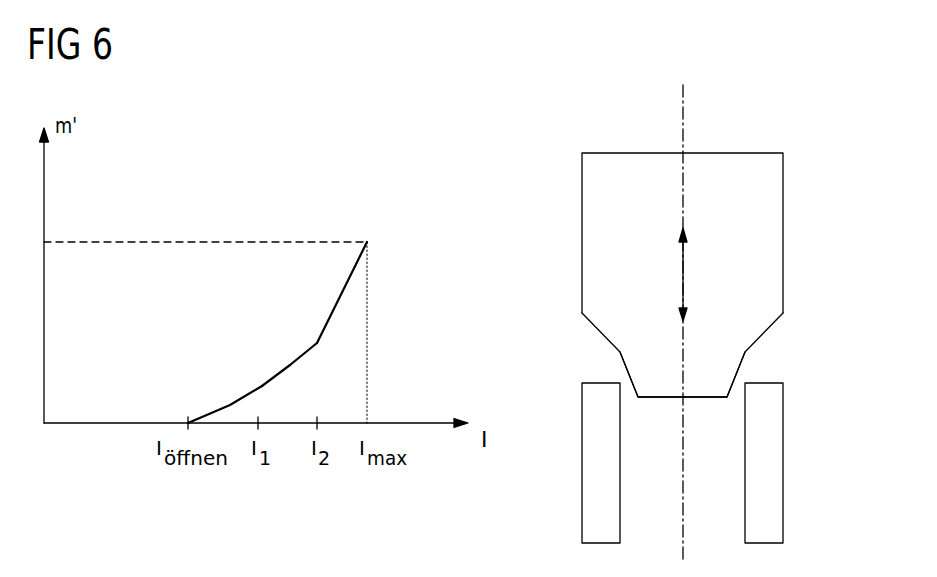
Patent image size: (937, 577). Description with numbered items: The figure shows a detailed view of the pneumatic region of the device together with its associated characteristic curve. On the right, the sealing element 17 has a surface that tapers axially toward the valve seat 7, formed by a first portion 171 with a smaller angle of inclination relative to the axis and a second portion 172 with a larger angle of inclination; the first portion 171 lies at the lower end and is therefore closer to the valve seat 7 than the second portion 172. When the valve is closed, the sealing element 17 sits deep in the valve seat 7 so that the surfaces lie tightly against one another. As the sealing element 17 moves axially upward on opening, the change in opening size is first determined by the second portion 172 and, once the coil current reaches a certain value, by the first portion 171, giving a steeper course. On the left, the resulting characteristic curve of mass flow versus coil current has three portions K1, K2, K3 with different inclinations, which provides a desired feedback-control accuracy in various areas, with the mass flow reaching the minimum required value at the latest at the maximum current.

The sealing element 17 is at (757, 257).
The second portion 172 is at (770, 332).
The first portion 171 is at (740, 364).
The valve seat 7 is at (765, 451).
The characteristic curve portion K1 is at (287, 366).
The characteristic curve portion K2 is at (222, 405).
The characteristic curve portion K3 is at (347, 283).